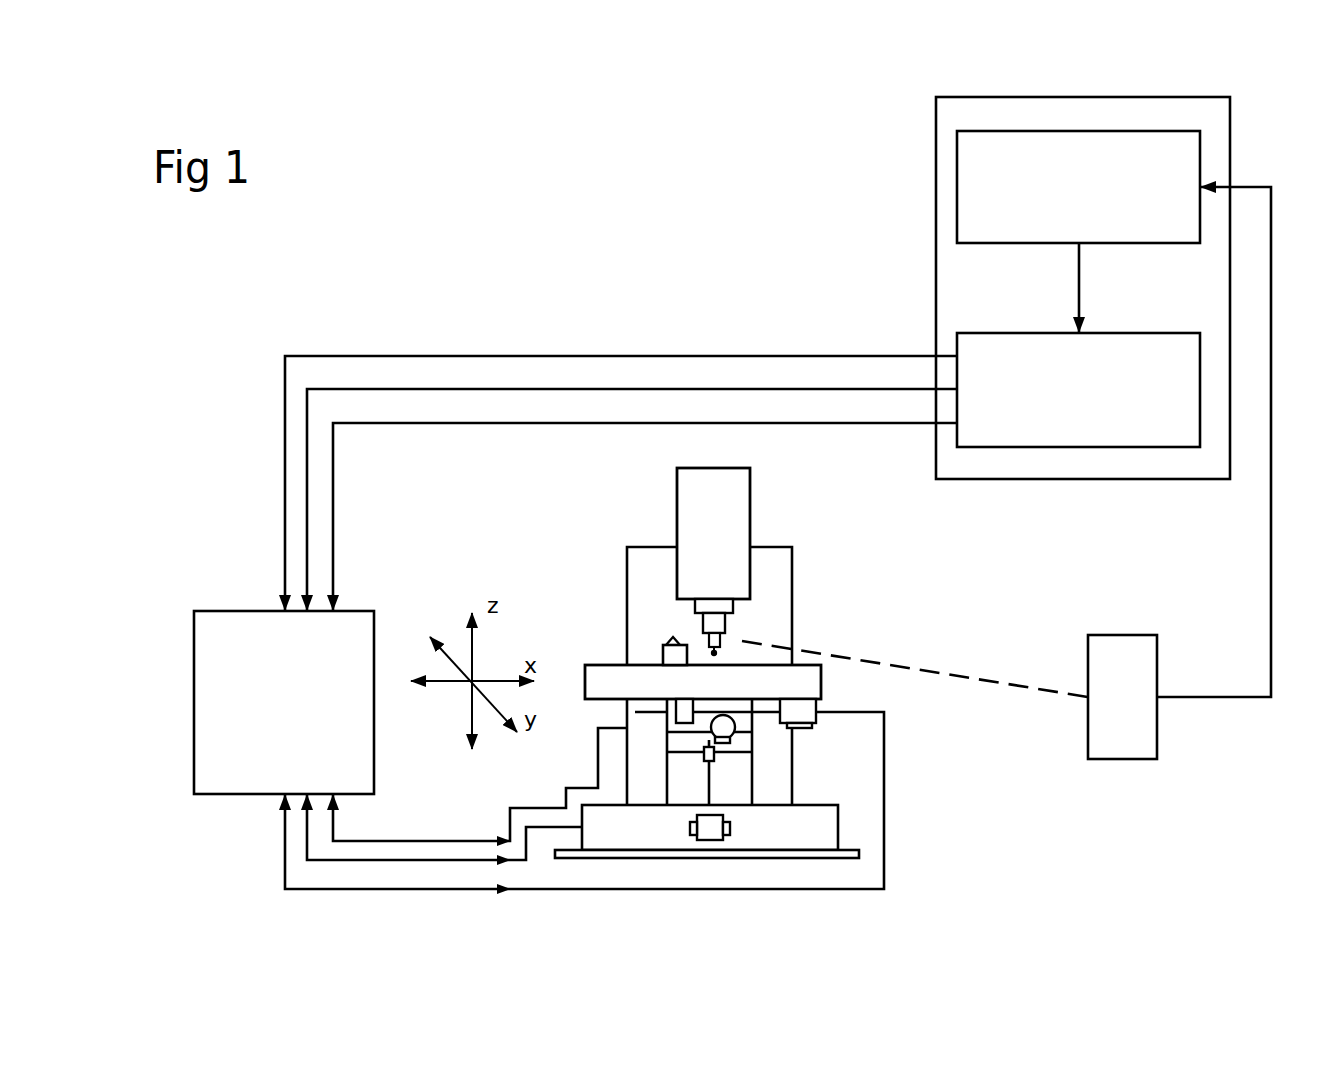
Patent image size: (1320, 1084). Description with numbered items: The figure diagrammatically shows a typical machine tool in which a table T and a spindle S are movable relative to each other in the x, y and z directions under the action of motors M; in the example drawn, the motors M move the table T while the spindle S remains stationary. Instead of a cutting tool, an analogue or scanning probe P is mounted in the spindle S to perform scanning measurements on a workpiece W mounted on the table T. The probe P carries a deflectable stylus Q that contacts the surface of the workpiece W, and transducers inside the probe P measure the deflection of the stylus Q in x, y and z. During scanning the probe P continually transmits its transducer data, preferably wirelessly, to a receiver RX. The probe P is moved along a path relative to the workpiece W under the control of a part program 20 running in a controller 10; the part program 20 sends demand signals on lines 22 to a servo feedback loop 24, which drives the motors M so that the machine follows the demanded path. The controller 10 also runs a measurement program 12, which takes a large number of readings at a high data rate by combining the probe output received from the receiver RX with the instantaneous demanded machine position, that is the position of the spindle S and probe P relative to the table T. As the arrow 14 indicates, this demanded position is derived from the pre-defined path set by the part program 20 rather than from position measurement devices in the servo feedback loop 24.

The controller 10 is at (936, 120).
The measurement program 12 is at (957, 187).
The arrow 14 is at (1079, 279).
The part program 20 is at (1045, 447).
The lines 22 is at (620, 423).
The servo feedback loop 24 is at (208, 610).
The receiver RX is at (1179, 473).
The spindle S is at (727, 620).
The probe P is at (722, 635).
The stylus Q is at (715, 649).
The table T is at (822, 683).
The workpiece W is at (662, 657).
The motors M is at (733, 733).